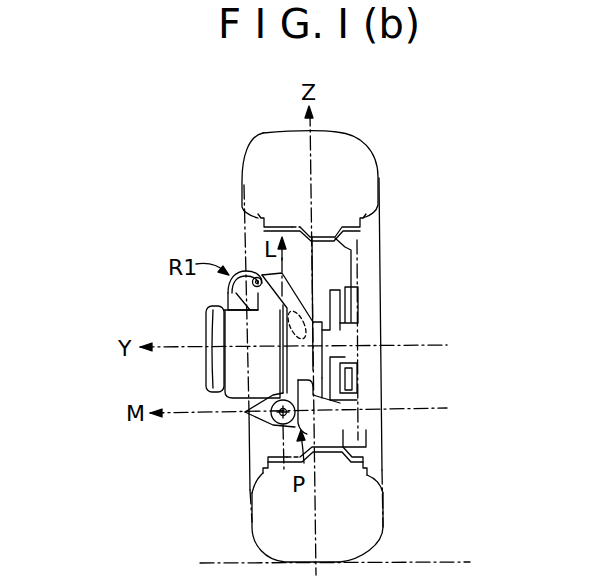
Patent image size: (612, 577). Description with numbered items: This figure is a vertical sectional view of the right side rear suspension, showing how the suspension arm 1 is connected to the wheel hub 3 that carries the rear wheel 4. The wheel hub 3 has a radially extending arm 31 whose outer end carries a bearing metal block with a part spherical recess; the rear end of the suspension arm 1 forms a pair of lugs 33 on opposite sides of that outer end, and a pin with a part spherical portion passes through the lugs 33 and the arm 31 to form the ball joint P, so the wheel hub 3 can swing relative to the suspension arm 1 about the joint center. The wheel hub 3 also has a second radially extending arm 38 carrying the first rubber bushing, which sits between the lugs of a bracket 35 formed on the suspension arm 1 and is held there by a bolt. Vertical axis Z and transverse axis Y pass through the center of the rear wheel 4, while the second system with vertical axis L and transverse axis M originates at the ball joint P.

The suspension arm 1 is at (232, 373).
The wheel hub 3 is at (320, 337).
The rear wheel 4 is at (380, 168).
The radially extending arm 31 is at (343, 407).
The lugs 33 is at (246, 411).
The bracket 35 is at (263, 270).
The radially extending arm 38 is at (292, 286).